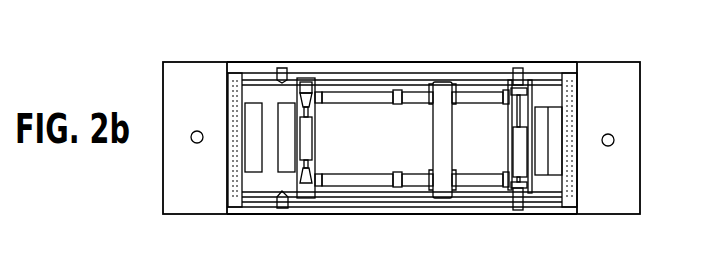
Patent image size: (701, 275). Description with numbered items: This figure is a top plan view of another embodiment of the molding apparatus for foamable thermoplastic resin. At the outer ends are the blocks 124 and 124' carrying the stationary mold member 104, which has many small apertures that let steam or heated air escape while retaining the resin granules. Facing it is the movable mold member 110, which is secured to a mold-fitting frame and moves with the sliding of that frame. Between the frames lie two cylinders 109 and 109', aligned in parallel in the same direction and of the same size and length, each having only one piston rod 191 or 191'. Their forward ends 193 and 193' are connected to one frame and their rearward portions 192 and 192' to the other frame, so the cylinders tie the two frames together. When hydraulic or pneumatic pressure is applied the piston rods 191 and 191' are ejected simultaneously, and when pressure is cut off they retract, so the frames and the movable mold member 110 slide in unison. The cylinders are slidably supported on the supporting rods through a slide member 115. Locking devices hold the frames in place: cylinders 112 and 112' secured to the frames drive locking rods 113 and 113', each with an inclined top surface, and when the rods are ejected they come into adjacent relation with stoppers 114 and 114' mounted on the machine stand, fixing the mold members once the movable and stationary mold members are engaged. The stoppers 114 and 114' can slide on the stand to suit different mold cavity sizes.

The stationary mold member 104 is at (248, 160).
The movable mold member 110 is at (280, 160).
The cylinder 112 is at (312, 164).
The cylinder 112' is at (512, 219).
The locking rod 113 is at (293, 92).
The locking rod 113' is at (555, 137).
The stopper 114 is at (275, 137).
The stopper 114' is at (537, 137).
The slide member 115 is at (433, 136).
The end block 124 is at (195, 119).
The end block 124' is at (608, 119).
The piston rod 191 is at (377, 211).
The piston rod 191' is at (377, 64).
The rearward portion 192 is at (501, 165).
The rearward portion 192' is at (498, 107).
The forward end 193 is at (402, 221).
The forward end 193' is at (402, 54).
The cylinder 109 is at (462, 211).
The cylinder 109' is at (474, 64).